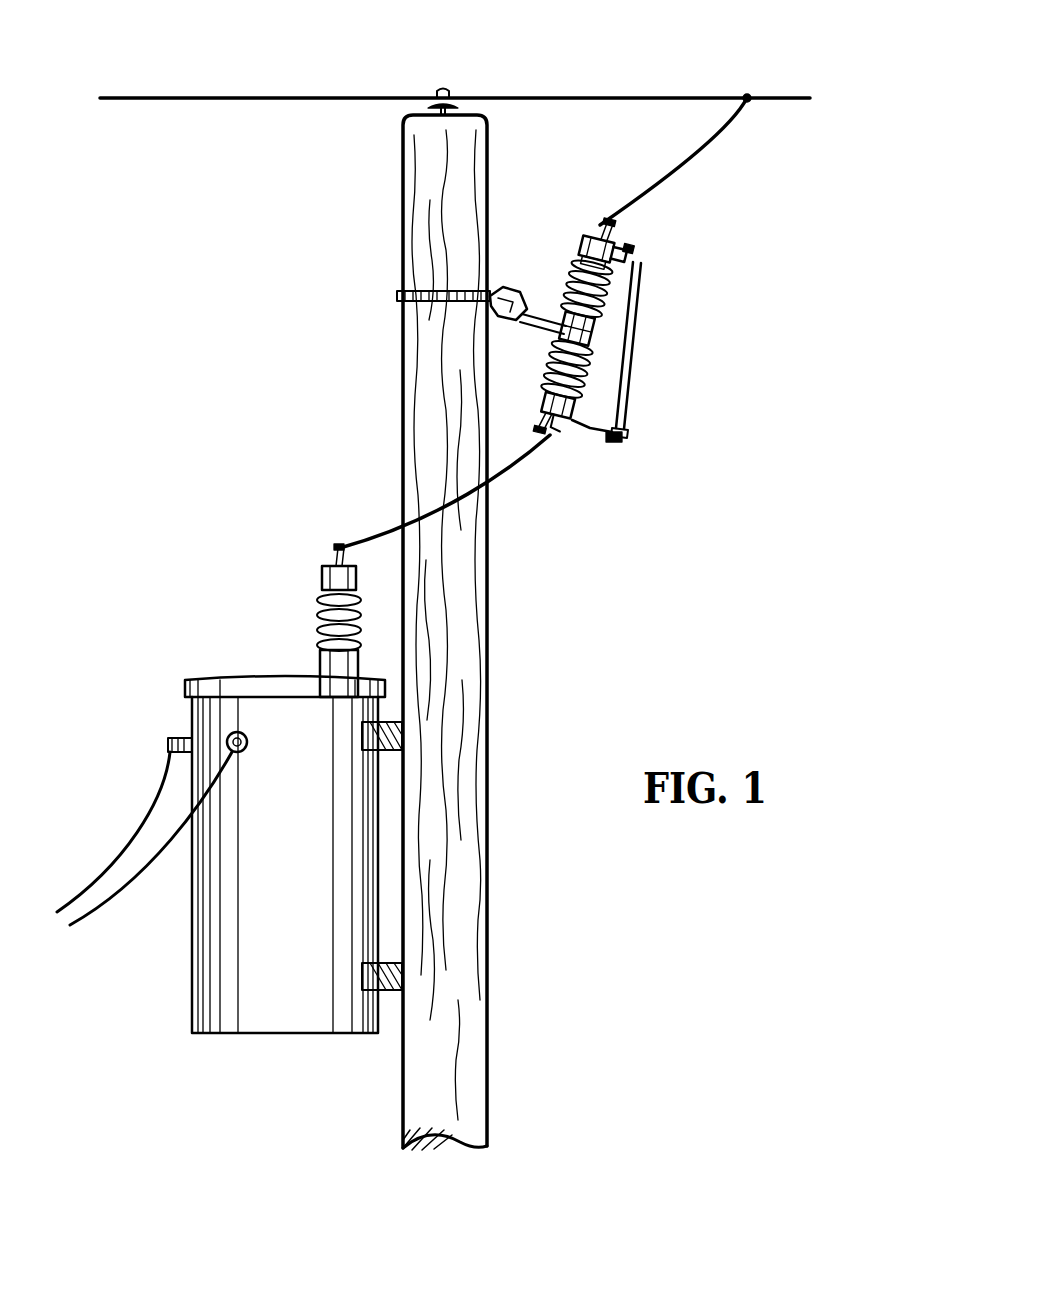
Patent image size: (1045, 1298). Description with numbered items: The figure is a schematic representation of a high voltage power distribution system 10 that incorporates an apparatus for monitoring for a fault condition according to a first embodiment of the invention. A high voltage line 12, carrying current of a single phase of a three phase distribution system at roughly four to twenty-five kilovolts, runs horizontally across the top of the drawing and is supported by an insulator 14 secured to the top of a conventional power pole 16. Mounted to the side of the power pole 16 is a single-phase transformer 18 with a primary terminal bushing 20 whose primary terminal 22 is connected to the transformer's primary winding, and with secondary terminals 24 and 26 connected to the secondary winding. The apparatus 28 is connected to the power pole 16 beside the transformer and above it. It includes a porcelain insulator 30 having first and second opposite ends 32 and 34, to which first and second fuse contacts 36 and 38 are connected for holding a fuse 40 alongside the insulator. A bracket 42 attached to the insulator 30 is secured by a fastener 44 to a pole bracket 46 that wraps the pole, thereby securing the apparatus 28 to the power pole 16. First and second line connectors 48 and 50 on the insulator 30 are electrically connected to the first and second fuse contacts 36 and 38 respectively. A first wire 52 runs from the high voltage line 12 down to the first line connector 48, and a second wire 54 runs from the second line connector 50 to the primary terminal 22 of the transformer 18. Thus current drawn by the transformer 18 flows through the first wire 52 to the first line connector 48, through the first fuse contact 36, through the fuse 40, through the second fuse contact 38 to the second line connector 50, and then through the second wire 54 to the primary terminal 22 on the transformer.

The high voltage power distribution system 10 is at (630, 62).
The high voltage line 12 is at (494, 96).
The insulator 14 is at (436, 95).
The power pole 16 is at (425, 208).
The single-phase transformer 18 is at (248, 680).
The primary terminal bushing 20 is at (315, 605).
The primary terminal 22 is at (338, 545).
The secondary terminal 24 is at (168, 745).
The secondary terminal 26 is at (250, 748).
The apparatus 28 is at (611, 333).
The porcelain insulator 30 is at (574, 272).
The first end 32 is at (582, 250).
The second end 34 is at (572, 432).
The first fuse contact 36 is at (654, 286).
The second fuse contact 38 is at (614, 434).
The fuse 40 is at (629, 345).
The bracket 42 is at (548, 330).
The fastener 44 is at (505, 290).
The pole bracket 46 is at (437, 300).
The first line connector 48 is at (601, 222).
The second line connector 50 is at (556, 442).
The first wire 52 is at (698, 152).
The second wire 54 is at (433, 512).